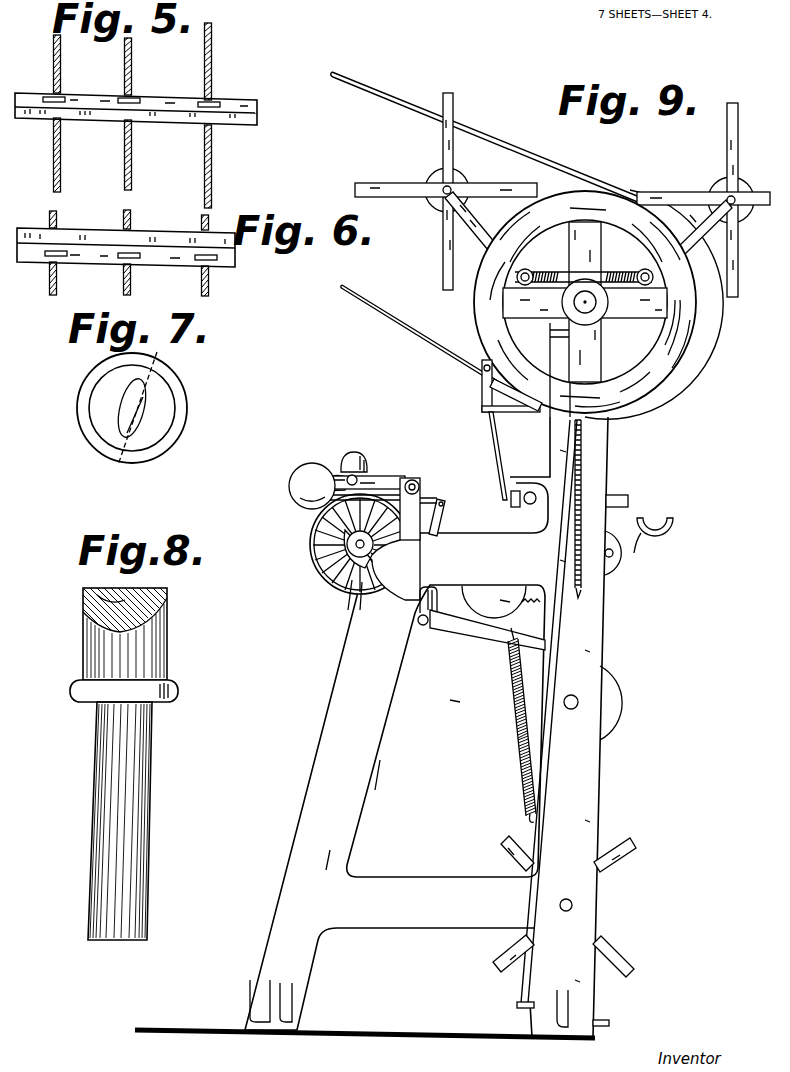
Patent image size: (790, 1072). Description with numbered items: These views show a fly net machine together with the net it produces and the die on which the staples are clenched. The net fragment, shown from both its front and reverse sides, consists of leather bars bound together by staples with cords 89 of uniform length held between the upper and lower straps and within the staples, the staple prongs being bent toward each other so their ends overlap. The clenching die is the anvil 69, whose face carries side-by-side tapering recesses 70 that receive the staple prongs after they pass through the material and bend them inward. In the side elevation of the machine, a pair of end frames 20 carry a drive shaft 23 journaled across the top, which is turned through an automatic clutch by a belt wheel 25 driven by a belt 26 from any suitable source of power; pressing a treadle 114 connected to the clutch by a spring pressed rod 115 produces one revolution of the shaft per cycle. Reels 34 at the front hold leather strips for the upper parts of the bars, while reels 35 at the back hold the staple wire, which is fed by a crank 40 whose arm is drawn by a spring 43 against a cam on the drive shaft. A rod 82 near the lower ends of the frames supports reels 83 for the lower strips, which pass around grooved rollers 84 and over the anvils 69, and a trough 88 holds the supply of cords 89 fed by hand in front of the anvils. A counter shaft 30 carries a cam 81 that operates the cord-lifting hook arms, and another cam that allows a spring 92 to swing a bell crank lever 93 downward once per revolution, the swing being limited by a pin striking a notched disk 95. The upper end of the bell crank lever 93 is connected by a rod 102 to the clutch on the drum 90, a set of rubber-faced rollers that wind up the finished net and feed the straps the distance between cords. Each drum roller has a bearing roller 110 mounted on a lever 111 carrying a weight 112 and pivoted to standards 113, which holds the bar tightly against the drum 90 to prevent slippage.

In FIG. 9, the end frames 20 is at (370, 732).
In FIG. 9, the drive shaft 23 is at (574, 302).
In FIG. 9, the belt wheel 25 is at (483, 329).
In FIG. 9, the belt 26 is at (417, 101).
In FIG. 9, the counter shaft 30 is at (572, 709).
In FIG. 9, the reels 34 is at (727, 156).
In FIG. 9, the reels 35 is at (395, 188).
In FIG. 9, the crank 40 is at (494, 452).
In FIG. 9, the spring 43 is at (622, 268).
In FIG. 7, the anvil 69 is at (167, 394).
In FIG. 8, the anvil 69 is at (152, 656).
In FIG. 7, the tapering recesses 70 is at (124, 397).
In FIG. 8, the tapering recesses 70 is at (106, 596).
In FIG. 9, the cam 81 is at (614, 712).
In FIG. 9, the rod 82 is at (566, 899).
In FIG. 9, the reels 83 is at (617, 862).
In FIG. 9, the grooved rollers 84 is at (622, 562).
In FIG. 9, the trough 88 is at (659, 531).
In FIG. 5, the cords 89 is at (203, 157).
In FIG. 6, the cords 89 is at (200, 280).
In FIG. 9, the drum 90 is at (320, 549).
In FIG. 9, the spring 92 is at (518, 747).
In FIG. 9, the bell crank lever 93 is at (473, 630).
In FIG. 9, the disk 95 is at (500, 600).
In FIG. 9, the rod 102 is at (439, 500).
In FIG. 9, the bearing roller 110 is at (318, 465).
In FIG. 9, the lever 111 is at (398, 462).
In FIG. 9, the weight 112 is at (357, 448).
In FIG. 9, the standards 113 is at (418, 480).
In FIG. 9, the treadle 114 is at (612, 1014).
In FIG. 9, the spring pressed rod 115 is at (558, 632).